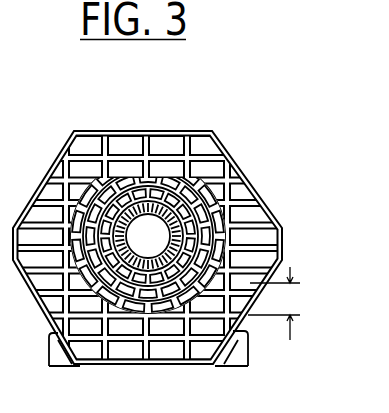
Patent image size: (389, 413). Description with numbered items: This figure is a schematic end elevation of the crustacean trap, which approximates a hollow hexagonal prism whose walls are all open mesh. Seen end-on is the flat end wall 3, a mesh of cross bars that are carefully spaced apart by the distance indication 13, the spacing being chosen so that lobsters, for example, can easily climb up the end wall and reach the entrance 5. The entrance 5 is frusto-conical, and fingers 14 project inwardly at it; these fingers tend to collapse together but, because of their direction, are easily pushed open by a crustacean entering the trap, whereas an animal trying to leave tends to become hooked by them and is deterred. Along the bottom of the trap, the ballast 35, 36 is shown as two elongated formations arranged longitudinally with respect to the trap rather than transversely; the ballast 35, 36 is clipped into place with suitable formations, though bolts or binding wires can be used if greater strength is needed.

The end wall 3 is at (164, 343).
The entrance 5 is at (226, 234).
The fingers 14 is at (171, 237).
The distance indication 13 is at (296, 305).
The ballast 35 is at (57, 357).
The ballast 36 is at (240, 348).